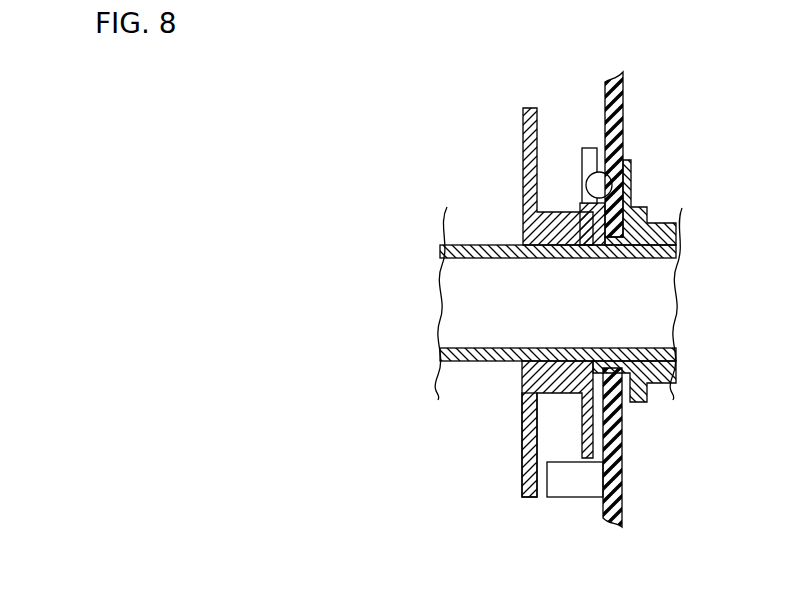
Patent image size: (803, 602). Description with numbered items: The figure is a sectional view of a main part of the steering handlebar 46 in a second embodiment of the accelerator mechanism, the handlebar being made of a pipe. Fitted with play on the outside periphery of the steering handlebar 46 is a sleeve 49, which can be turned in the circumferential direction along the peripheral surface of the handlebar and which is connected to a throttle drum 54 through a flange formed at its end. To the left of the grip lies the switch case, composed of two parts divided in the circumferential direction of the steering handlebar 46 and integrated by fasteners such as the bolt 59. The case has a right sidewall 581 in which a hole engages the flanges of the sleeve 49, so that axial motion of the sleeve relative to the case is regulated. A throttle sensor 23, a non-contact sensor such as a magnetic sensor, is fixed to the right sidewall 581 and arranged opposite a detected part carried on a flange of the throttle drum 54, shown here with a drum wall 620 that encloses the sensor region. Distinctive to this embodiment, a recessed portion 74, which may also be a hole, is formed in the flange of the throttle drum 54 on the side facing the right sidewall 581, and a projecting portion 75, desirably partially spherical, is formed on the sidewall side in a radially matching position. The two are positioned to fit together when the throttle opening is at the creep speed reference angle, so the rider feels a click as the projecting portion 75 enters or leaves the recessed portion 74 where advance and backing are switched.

The steering handlebar 46 is at (468, 248).
The throttle drum 54 is at (538, 382).
The vertical wall 620 is at (530, 440).
The recessed portion 74 is at (580, 197).
The projecting portion 75 is at (598, 178).
The right sidewall 581 is at (613, 107).
The bolt 59 is at (662, 213).
The sleeve 49 is at (662, 383).
The throttle sensor 23 is at (582, 488).